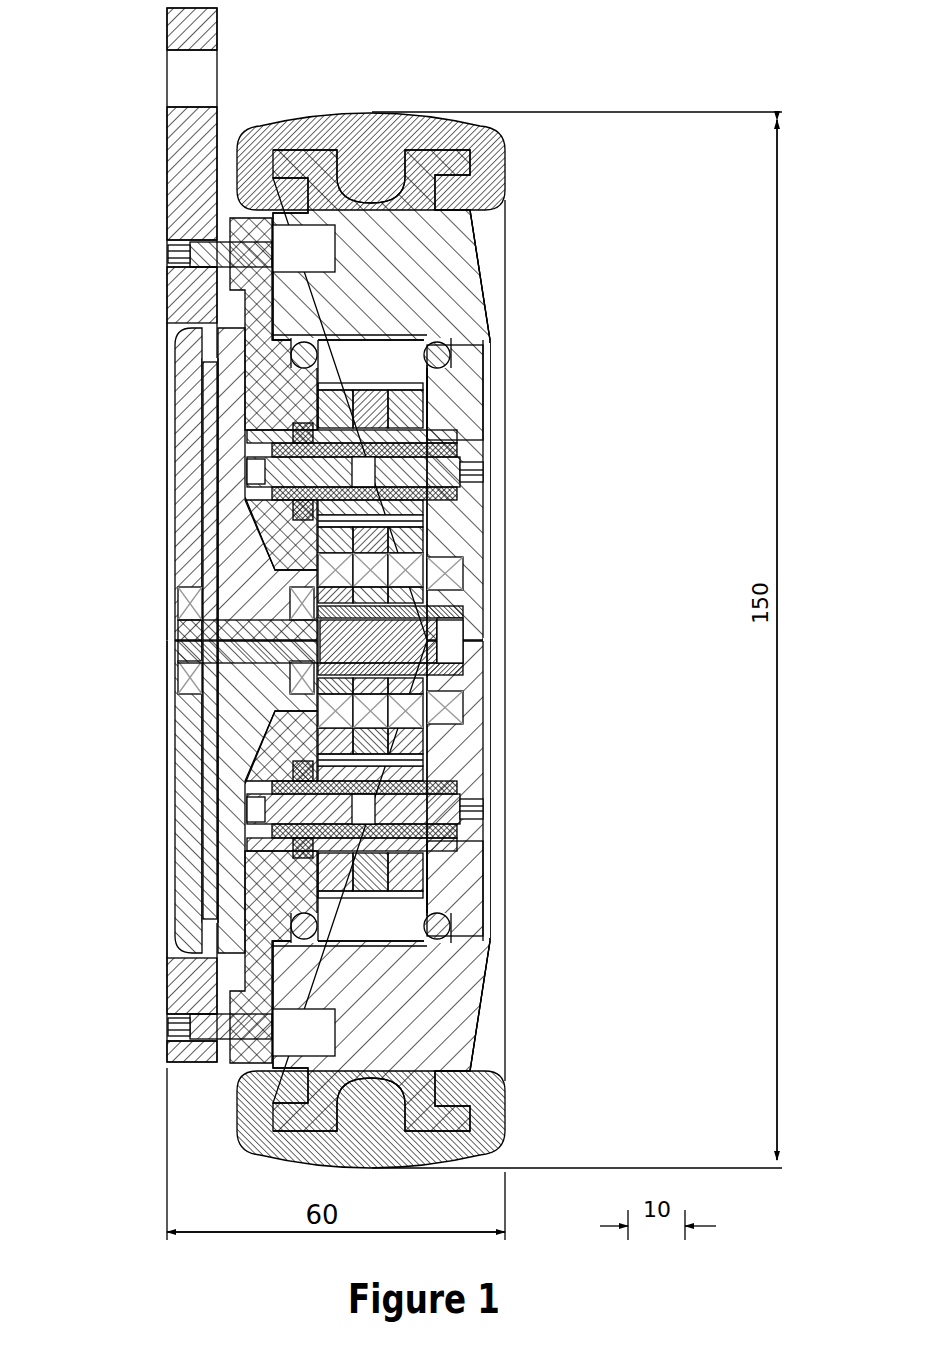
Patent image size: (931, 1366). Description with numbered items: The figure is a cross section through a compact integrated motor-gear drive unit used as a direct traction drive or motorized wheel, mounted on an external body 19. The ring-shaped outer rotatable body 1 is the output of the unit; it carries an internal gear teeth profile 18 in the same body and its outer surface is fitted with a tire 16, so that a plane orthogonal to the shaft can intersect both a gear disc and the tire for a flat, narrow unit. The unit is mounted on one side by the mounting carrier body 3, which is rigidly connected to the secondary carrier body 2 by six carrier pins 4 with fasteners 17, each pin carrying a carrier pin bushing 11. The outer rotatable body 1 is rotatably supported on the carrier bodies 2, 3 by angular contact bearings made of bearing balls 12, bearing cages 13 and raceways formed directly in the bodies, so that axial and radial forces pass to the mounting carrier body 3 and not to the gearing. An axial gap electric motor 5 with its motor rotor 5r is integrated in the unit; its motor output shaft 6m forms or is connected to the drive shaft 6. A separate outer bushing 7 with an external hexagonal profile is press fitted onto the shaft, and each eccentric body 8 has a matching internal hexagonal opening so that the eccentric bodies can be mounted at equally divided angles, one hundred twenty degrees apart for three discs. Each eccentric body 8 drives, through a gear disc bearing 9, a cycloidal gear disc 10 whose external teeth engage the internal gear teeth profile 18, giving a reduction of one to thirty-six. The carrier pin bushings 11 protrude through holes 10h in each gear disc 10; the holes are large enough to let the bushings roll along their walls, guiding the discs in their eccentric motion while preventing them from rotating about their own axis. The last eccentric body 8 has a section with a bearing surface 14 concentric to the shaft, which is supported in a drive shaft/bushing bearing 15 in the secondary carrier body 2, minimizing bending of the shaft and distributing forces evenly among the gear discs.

The outer rotatable body 1 is at (395, 258).
The secondary carrier body 2 is at (457, 395).
The mounting carrier body 3 is at (277, 877).
The carrier pin 4 is at (457, 496).
The motor 5 is at (242, 772).
The motor rotor 5r is at (210, 530).
The drive shaft 6 is at (377, 645).
The motor output shaft 6m is at (260, 650).
The separate outer bushing 7 is at (367, 688).
The eccentric body 8 is at (408, 593).
The gear disc bearing 9 is at (407, 577).
The cycloidal gear disc 10 is at (402, 412).
The hole 10h is at (340, 520).
The carrier pin bushing 11 is at (415, 437).
The bearing ball 12 is at (438, 933).
The bearing cage 13 is at (475, 333).
The section having a bearing surface 14 is at (440, 588).
The drive shaft/bushing bearing 15 is at (248, 707).
The tire 16 is at (372, 147).
The fastener 17 is at (452, 473).
The internal gear teeth profile 18 is at (375, 385).
The external body 19 is at (185, 158).